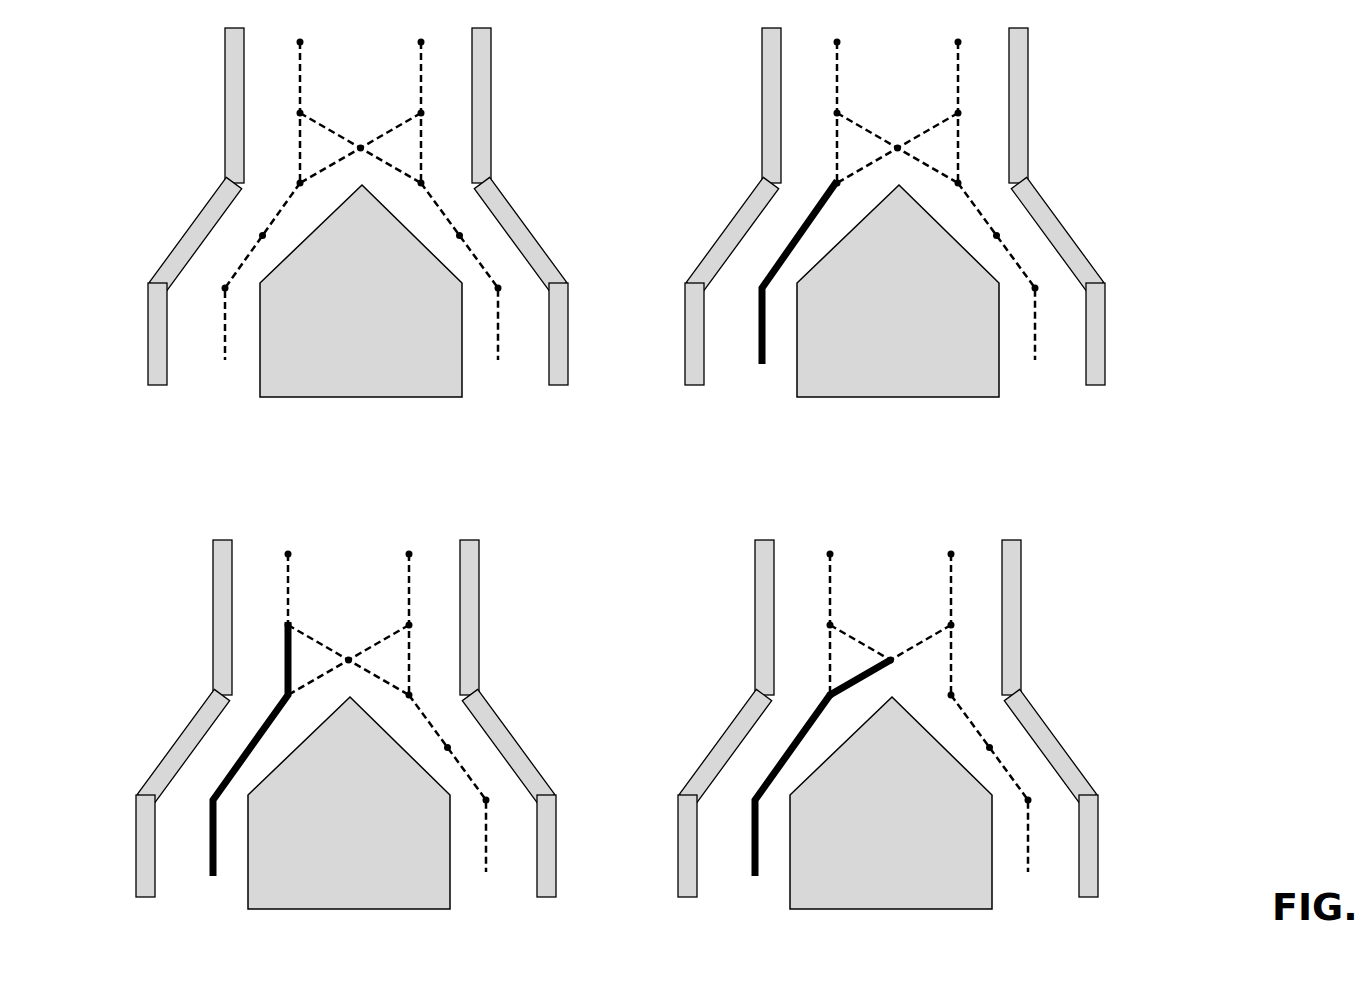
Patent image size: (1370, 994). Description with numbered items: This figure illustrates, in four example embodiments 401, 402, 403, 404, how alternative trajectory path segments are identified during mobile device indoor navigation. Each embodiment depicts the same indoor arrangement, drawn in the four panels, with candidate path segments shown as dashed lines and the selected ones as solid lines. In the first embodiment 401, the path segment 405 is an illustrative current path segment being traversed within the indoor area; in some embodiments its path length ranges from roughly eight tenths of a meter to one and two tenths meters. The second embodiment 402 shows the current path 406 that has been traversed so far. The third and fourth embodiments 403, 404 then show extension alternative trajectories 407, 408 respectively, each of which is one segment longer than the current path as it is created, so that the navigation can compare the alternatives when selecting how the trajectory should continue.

The example embodiment 401 is at (340, 75).
The example embodiment 402 is at (857, 61).
The example embodiment 403 is at (327, 586).
The example embodiment 404 is at (862, 583).
The path segment 405 is at (268, 223).
The current path 406 is at (787, 250).
The extension alternative trajectory 407 is at (285, 663).
The extension alternative trajectory 408 is at (853, 677).